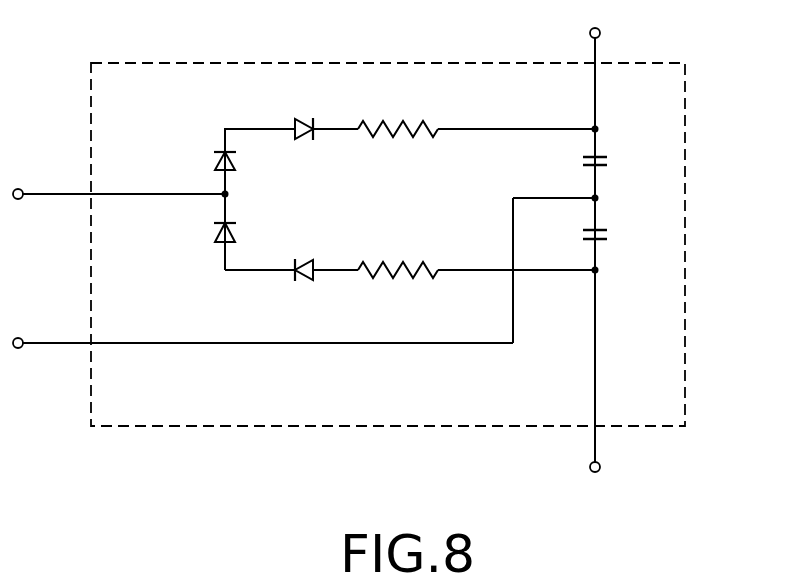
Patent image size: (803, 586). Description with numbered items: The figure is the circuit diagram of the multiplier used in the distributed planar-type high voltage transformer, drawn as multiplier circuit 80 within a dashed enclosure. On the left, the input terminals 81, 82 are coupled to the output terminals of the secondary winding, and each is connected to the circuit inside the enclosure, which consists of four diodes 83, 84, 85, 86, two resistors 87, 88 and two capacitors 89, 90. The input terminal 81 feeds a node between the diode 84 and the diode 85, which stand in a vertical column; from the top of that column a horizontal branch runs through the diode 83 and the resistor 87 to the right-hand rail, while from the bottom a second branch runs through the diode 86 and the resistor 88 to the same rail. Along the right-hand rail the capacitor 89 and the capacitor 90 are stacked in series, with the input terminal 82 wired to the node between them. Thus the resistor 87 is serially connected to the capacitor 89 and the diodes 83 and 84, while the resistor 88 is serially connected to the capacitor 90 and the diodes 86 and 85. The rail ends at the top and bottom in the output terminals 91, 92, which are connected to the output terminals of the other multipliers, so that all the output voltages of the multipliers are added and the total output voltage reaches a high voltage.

The multiplier circuit 80 is at (686, 180).
The input terminal 81 is at (60, 192).
The input terminal 82 is at (60, 345).
The diode 83 is at (300, 118).
The diode 84 is at (212, 160).
The diode 85 is at (212, 232).
The diode 86 is at (300, 284).
The resistor 87 is at (394, 119).
The resistor 88 is at (394, 283).
The capacitor 89 is at (609, 163).
The capacitor 90 is at (609, 237).
The output terminal 91 is at (597, 48).
The output terminal 92 is at (597, 440).